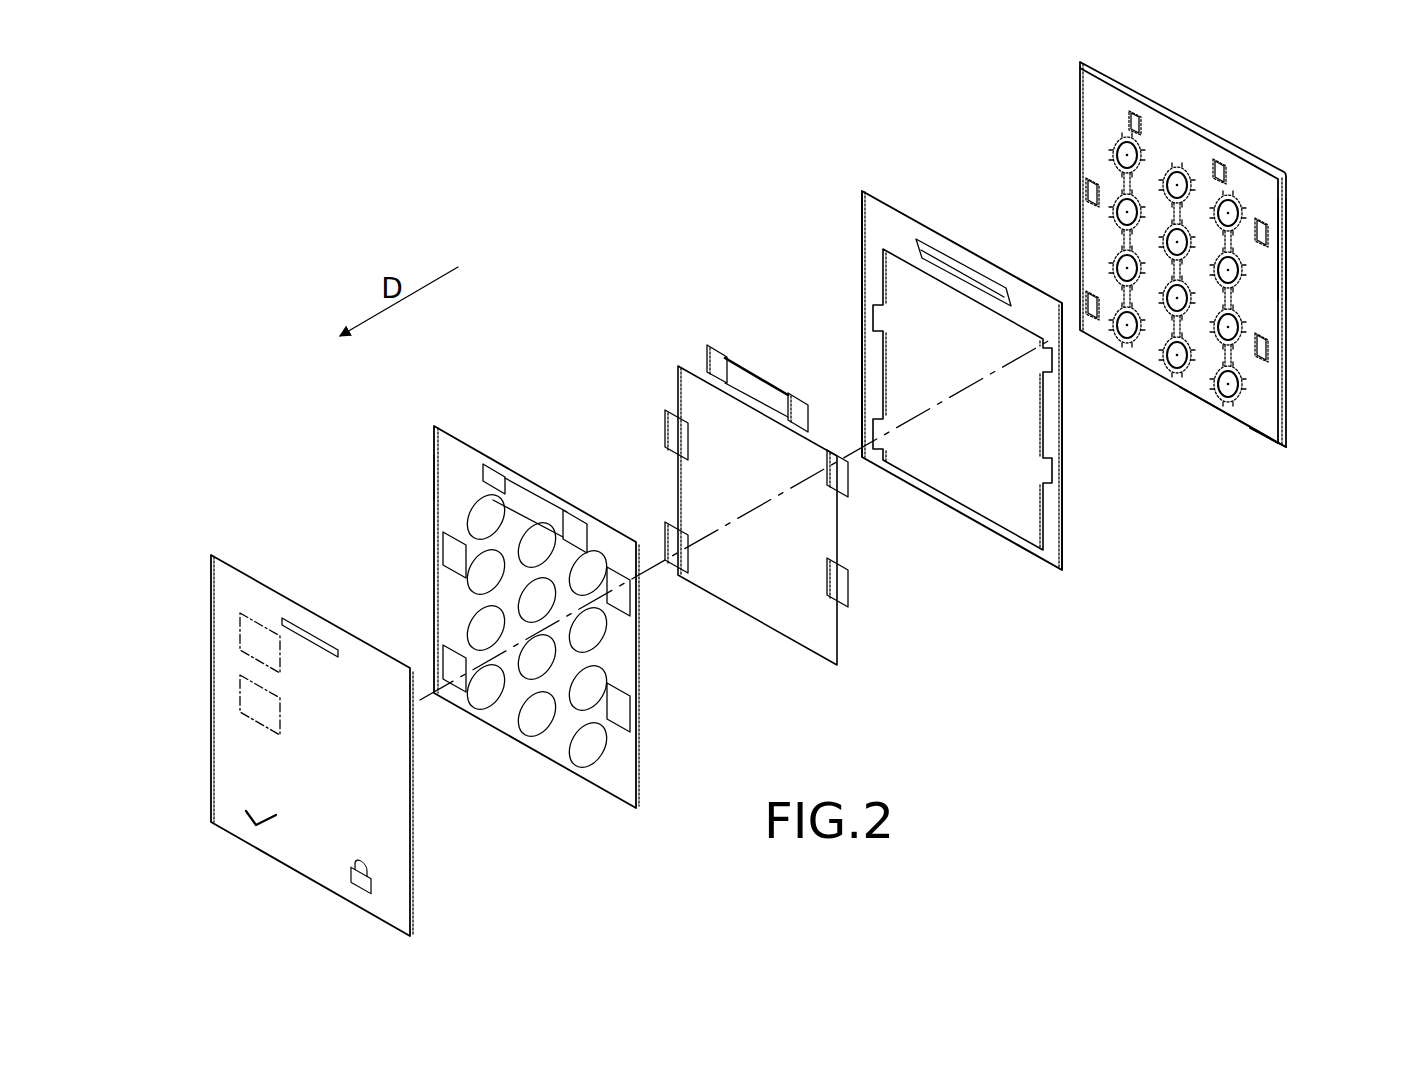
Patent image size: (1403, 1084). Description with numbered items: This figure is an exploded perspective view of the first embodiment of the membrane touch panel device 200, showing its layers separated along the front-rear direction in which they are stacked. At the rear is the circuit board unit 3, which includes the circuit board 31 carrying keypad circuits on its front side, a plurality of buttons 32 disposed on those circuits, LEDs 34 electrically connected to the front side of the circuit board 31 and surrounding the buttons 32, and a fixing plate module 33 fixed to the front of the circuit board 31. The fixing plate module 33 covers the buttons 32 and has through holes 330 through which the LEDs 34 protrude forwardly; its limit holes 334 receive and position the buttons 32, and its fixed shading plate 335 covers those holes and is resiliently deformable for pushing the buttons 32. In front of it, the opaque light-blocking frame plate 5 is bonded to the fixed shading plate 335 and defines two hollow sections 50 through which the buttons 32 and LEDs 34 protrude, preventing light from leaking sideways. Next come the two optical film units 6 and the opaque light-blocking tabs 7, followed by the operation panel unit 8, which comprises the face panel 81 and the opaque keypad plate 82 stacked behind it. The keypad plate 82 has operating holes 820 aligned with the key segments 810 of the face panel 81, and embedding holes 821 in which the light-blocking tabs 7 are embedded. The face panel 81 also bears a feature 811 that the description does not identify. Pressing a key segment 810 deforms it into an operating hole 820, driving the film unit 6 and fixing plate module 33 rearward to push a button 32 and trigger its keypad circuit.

The membrane touch panel device 200 is at (595, 291).
The face panel 81 is at (211, 562).
The key region 811 is at (245, 622).
The key segments 810 is at (243, 697).
The operation panel unit 8 is at (455, 423).
The keypad plate 82 is at (434, 470).
The operating holes 820 is at (472, 617).
The embedding holes 821 is at (622, 596).
The optical film units 6 is at (760, 360).
The opaque light-blocking tabs 7 is at (717, 352).
The opaque light-blocking frame plate 5 is at (862, 214).
The hollow sections 50 is at (933, 257).
The circuit board unit 3 is at (1296, 181).
The circuit board 31 is at (1288, 214).
The buttons 32 is at (1163, 362).
The fixing plate module 33 is at (1237, 427).
The through holes 330 is at (1137, 117).
The LEDs 34 is at (1218, 165).
The limit holes 334 is at (1177, 358).
The fixed shading plate 335 is at (1270, 434).